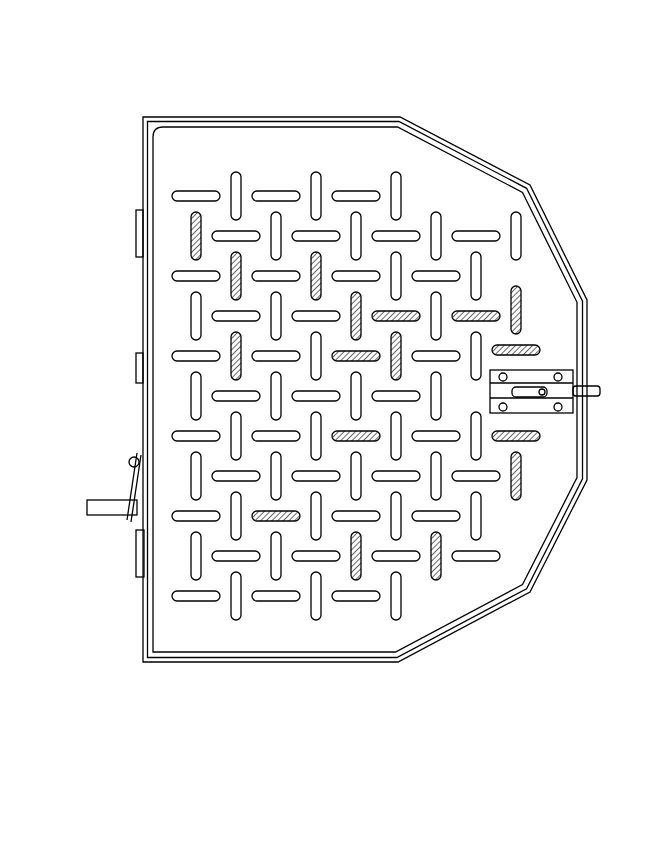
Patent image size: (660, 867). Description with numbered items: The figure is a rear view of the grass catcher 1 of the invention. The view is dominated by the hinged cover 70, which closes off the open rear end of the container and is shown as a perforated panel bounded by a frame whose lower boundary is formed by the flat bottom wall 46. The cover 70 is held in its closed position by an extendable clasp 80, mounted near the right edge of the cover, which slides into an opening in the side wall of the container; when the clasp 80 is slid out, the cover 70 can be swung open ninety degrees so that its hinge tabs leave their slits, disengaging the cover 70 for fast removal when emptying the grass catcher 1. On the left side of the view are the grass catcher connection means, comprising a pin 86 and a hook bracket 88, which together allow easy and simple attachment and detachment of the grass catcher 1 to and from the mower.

The grass catcher 1 is at (441, 84).
The flat bottom wall 46 is at (357, 661).
The hinged cover 70 is at (365, 352).
The extendable clasp 80 is at (562, 378).
The pin 86 is at (132, 502).
The hook bracket 88 is at (138, 495).